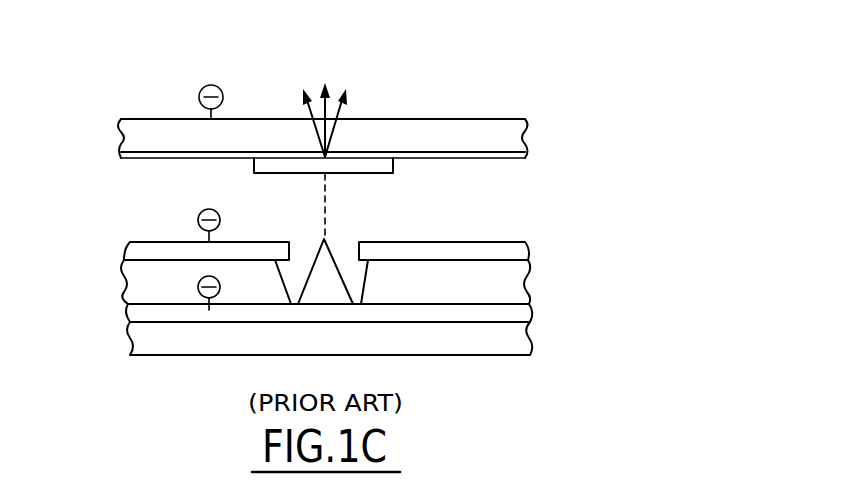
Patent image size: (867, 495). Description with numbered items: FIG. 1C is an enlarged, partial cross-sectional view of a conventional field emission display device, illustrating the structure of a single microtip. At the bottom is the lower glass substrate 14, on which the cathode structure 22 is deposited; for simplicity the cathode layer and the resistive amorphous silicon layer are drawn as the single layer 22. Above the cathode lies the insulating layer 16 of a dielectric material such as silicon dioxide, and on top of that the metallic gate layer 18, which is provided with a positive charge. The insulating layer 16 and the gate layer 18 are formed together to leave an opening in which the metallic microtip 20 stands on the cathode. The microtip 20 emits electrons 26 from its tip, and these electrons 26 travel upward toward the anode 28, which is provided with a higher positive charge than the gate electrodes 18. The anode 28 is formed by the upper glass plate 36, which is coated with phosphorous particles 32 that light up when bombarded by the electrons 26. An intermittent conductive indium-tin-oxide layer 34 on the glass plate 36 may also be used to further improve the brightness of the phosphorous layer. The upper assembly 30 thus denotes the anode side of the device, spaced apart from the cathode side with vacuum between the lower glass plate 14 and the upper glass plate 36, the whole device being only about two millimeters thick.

The glass substrate 14 is at (508, 342).
The insulating layer 16 is at (147, 284).
The metallic gate layer 18 is at (142, 248).
The metallic microtip 20 is at (328, 260).
The cathode structure 22 is at (520, 315).
The electrons 26 is at (322, 195).
The anode 28 is at (364, 131).
The anode assembly 30 is at (364, 111).
The phosphorous particles 32 is at (383, 167).
The indium-tin-oxide (ITO) layer 34 is at (477, 155).
The glass plate 36 is at (513, 135).